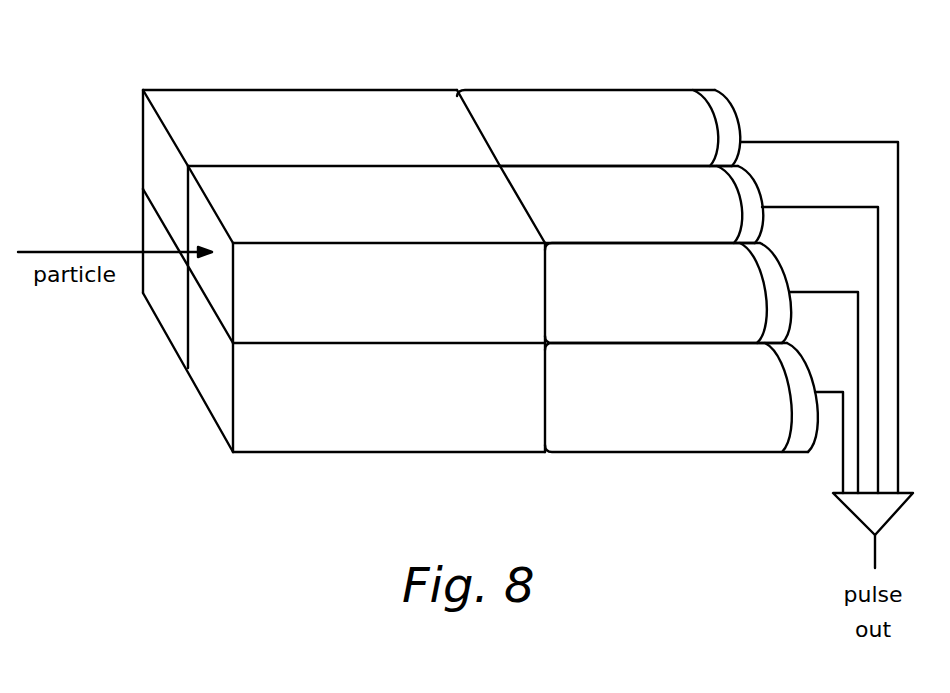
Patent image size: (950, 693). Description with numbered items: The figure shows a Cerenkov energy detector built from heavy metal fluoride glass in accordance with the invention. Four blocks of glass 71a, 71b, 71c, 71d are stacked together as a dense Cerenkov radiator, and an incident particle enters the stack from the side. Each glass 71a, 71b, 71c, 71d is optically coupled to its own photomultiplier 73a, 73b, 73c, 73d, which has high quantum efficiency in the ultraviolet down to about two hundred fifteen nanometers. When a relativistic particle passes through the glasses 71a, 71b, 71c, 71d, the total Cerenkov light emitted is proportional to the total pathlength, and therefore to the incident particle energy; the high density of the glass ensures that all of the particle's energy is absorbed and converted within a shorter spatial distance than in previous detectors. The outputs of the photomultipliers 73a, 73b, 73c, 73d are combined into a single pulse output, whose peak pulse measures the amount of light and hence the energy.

The glass 71a is at (188, 97).
The glass 71b is at (265, 223).
The glass 71c is at (163, 312).
The glass 71d is at (328, 394).
The photomultiplier 73a is at (502, 100).
The photomultiplier 73b is at (545, 218).
The photomultiplier 73c is at (570, 312).
The photomultiplier 73d is at (572, 412).